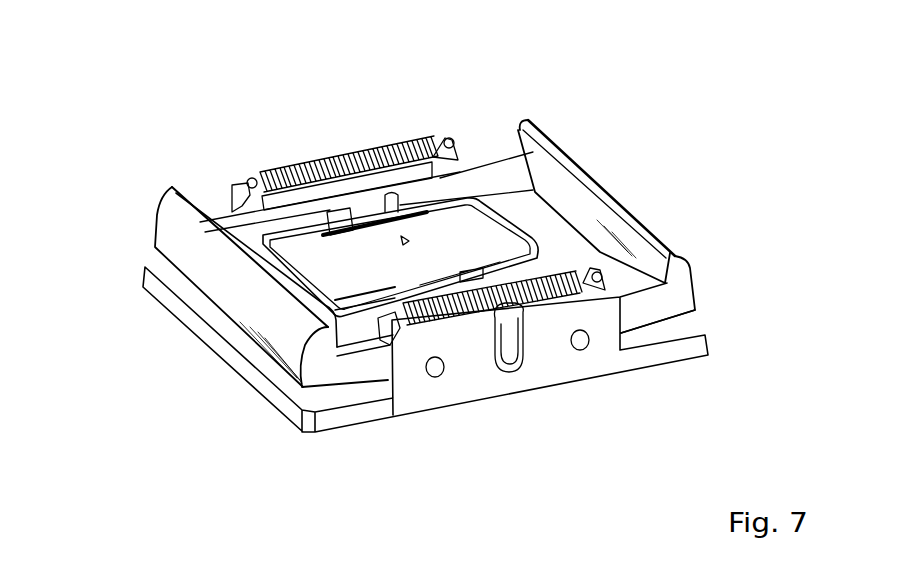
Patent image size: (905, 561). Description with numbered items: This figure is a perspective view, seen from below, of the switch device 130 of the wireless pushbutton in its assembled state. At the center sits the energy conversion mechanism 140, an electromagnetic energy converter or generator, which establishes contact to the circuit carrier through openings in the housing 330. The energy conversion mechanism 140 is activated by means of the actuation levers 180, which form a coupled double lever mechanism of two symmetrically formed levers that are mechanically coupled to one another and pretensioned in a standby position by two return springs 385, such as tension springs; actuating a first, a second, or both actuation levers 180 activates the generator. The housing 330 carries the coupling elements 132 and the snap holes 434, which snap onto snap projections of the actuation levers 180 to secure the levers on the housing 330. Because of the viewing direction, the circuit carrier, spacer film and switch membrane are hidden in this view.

The switch device 130 is at (182, 130).
The coupling elements 132 is at (517, 373).
The energy conversion mechanism 140 is at (482, 232).
The actuation lever 180 is at (183, 235).
The housing 330 is at (180, 305).
The return springs 385 is at (333, 153).
The snap holes 434 is at (440, 377).